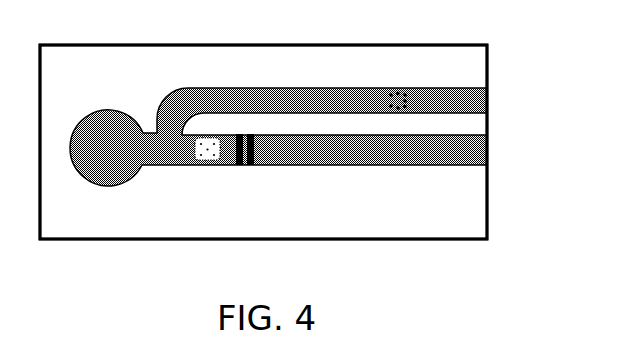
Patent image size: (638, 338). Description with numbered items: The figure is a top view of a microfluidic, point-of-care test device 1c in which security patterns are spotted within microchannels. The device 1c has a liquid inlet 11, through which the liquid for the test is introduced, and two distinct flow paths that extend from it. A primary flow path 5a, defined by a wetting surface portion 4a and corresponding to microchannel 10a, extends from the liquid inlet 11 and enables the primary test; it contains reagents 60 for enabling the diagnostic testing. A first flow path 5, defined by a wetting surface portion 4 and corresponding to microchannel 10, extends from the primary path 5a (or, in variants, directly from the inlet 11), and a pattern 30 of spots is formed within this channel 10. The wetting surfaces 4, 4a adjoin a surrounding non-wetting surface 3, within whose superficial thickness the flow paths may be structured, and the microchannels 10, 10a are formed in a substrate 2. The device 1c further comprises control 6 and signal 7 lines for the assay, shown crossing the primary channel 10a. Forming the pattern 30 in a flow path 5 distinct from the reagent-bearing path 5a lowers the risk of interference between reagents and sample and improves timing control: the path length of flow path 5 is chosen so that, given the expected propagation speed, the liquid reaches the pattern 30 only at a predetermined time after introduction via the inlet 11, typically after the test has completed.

The test device 1c is at (320, 142).
The substrate 2 is at (403, 240).
The non-wetting surface 3 is at (348, 58).
The wetting surface 4 is at (278, 119).
The first flow path 5 is at (278, 119).
The second wetting surface portion 4a is at (278, 149).
The second flow path 5a is at (278, 148).
The control line 6 is at (238, 166).
The signal line 7 is at (250, 166).
The microchannel 10 is at (278, 119).
The primary microchannel 10a is at (278, 148).
The liquid inlet 11 is at (113, 127).
The pattern 30 is at (406, 100).
The reagents 60 is at (203, 166).